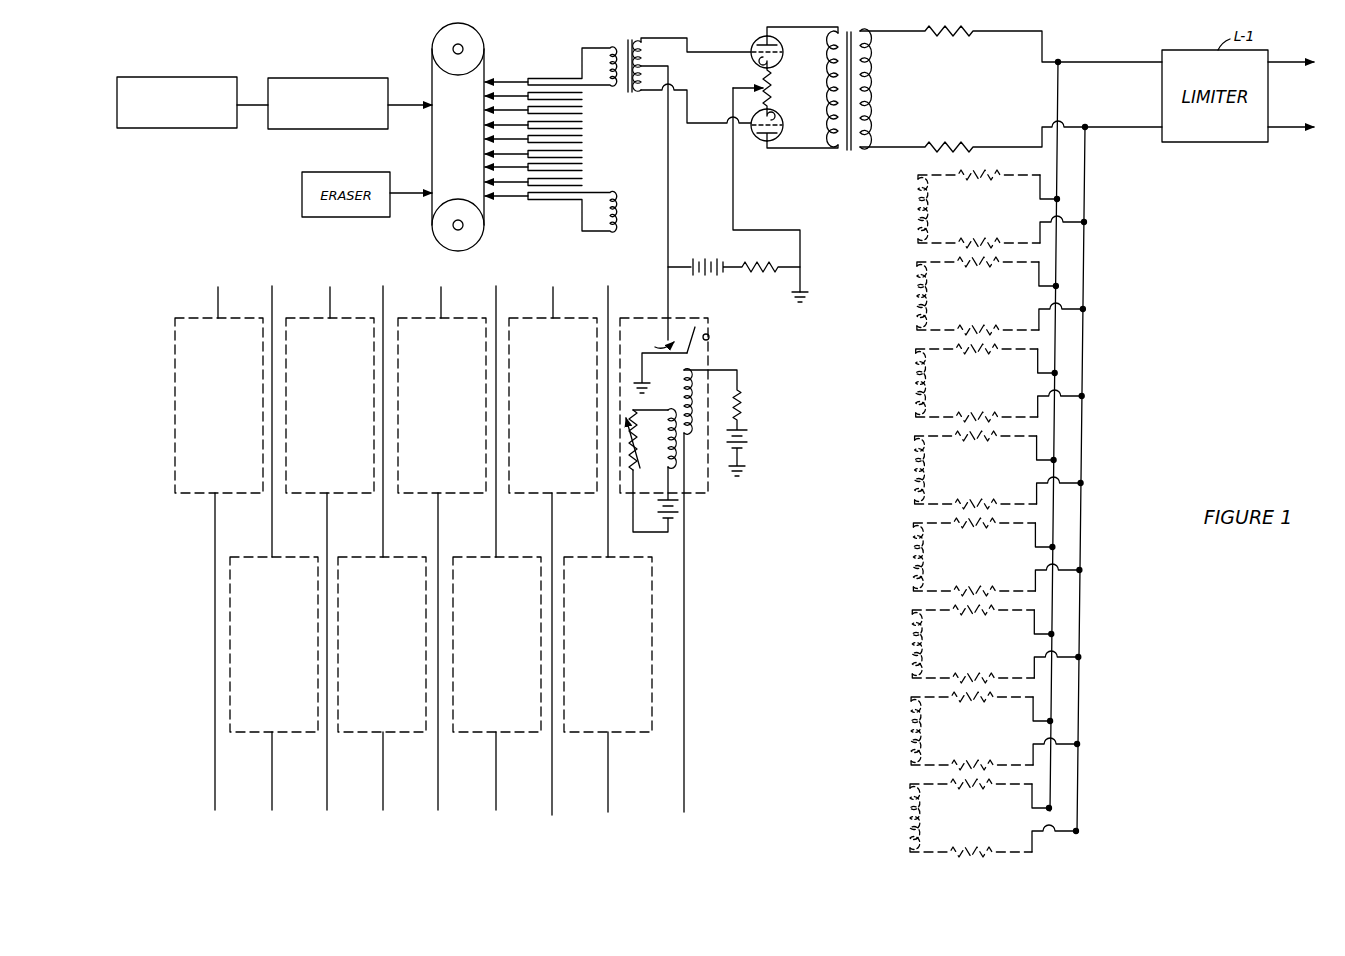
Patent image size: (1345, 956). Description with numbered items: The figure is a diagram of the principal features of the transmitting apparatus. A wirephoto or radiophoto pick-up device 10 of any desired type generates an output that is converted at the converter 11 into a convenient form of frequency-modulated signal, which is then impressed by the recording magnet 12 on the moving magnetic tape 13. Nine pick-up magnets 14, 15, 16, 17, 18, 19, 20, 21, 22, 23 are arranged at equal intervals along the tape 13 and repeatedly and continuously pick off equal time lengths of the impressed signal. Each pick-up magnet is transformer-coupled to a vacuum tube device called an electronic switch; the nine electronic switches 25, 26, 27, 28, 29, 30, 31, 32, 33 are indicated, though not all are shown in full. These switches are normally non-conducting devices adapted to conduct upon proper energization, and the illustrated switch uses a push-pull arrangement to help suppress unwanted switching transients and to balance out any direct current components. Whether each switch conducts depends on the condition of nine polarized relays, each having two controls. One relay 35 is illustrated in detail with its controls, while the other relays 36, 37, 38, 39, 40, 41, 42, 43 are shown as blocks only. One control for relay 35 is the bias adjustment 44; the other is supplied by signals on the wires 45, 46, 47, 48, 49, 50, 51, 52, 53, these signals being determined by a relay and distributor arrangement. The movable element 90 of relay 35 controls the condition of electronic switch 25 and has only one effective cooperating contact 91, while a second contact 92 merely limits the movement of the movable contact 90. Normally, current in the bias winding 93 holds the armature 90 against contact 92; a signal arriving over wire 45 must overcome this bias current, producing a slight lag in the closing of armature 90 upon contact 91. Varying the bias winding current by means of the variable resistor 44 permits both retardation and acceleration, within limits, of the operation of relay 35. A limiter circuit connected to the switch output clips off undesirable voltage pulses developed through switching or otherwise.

The pick-up device 10 is at (182, 129).
The frequency-modulated signal converter 11 is at (342, 130).
The recording magnet 12 is at (431, 102).
The magnetic tape 13 is at (432, 146).
The pick-up magnet 14 is at (482, 83).
The pick-up magnet 15 is at (489, 95).
The pick-up magnet 16 is at (482, 110).
The pick-up magnet 17 is at (482, 125).
The pick-up magnet 18 is at (482, 139).
The pick-up magnet 19 is at (482, 154).
The pick-up magnet 20 is at (482, 168).
The pick-up magnet 21 is at (486, 185).
The pick-up magnet 22 is at (483, 196).
The pick-up magnet 23 is at (429, 196).
The electronic switch 25 is at (994, 89).
The electronic switch 26 is at (1002, 209).
The electronic switch 27 is at (1001, 296).
The electronic switch 28 is at (1000, 383).
The electronic switch 29 is at (999, 470).
The electronic switch 30 is at (997, 557).
The electronic switch 31 is at (996, 644).
The electronic switch 32 is at (995, 731).
The electronic switch 33 is at (994, 818).
The polarized relay 35 is at (684, 318).
The polarized relay 36 is at (620, 556).
The polarized relay 37 is at (572, 317).
The polarized relay 38 is at (517, 556).
The polarized relay 39 is at (462, 317).
The polarized relay 40 is at (400, 556).
The polarized relay 41 is at (349, 317).
The polarized relay 42 is at (294, 556).
The polarized relay 43 is at (239, 317).
The bias adjustment 44 is at (632, 447).
The signal wire 45 is at (684, 807).
The signal wire 46 is at (608, 807).
The signal wire 47 is at (552, 807).
The signal wire 48 is at (496, 807).
The signal wire 49 is at (438, 807).
The signal wire 50 is at (383, 807).
The signal wire 51 is at (327, 807).
The signal wire 52 is at (272, 807).
The signal wire 53 is at (215, 807).
The movable element 90 is at (699, 333).
The cooperating contact 91 is at (657, 336).
The second contact 92 is at (710, 339).
The bias winding 93 is at (676, 462).